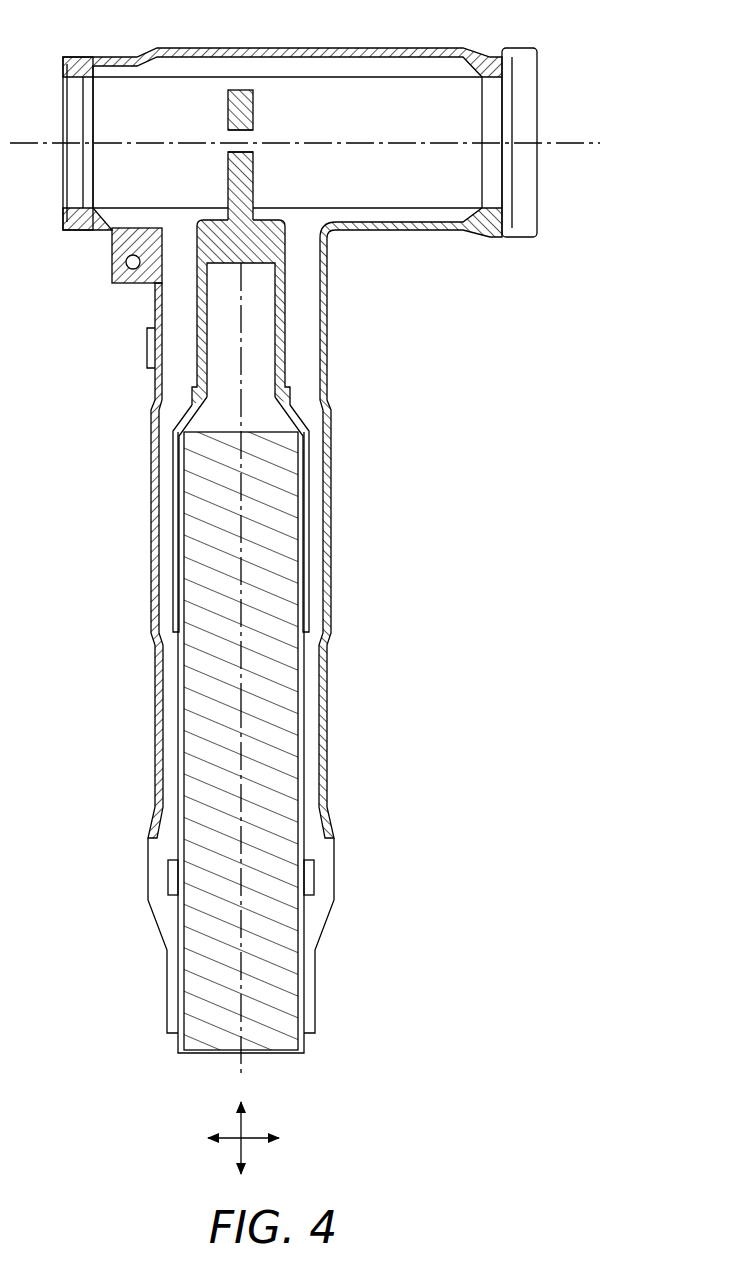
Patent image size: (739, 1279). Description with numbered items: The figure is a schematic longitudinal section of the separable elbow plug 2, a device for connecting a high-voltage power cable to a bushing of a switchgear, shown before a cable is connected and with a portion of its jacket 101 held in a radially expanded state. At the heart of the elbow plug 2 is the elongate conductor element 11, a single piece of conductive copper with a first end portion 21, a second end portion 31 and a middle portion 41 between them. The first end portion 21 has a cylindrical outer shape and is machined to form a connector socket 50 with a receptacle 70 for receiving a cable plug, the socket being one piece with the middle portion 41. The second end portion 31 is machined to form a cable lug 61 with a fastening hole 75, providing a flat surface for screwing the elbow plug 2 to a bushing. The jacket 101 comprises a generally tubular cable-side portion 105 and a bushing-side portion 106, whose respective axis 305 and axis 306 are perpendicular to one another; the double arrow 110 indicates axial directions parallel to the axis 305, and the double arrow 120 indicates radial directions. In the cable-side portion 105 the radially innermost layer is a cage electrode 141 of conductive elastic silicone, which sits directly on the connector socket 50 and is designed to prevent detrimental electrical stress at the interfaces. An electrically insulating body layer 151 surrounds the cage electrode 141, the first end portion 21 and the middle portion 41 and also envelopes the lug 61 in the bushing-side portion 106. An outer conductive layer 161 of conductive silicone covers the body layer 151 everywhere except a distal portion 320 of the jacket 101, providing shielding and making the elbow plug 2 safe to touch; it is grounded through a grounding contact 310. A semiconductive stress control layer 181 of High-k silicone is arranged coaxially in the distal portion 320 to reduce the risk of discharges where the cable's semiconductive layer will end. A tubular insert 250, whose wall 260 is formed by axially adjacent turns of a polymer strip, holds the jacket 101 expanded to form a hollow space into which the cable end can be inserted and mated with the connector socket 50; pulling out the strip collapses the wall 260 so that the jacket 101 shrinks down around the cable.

The separable elbow plug 2 is at (471, 422).
The conductor element 11 is at (265, 210).
The first end portion 21 is at (292, 290).
The second end portion 31 is at (218, 151).
The middle portion 41 is at (237, 202).
The connector socket 50 is at (285, 318).
The cable lug 61 is at (228, 94).
The receptacle 70 is at (244, 360).
The fastening hole 75 is at (228, 135).
The jacket 101 is at (430, 35).
The cable-side portion 105 is at (378, 547).
The bushing-side portion 106 is at (580, 73).
The double arrow 110 is at (240, 1150).
The double arrow 120 is at (238, 1135).
The cage electrode 141 is at (310, 492).
The body layer 151 is at (290, 64).
The outer conductive layer 161 is at (185, 48).
The stress control layer 181 is at (314, 876).
The tubular insert 250 is at (258, 709).
The wall 260 is at (300, 732).
The axis 305 is at (243, 1076).
The axis 306 is at (580, 140).
The grounding contact 310 is at (120, 270).
The distal portion 320 is at (428, 945).